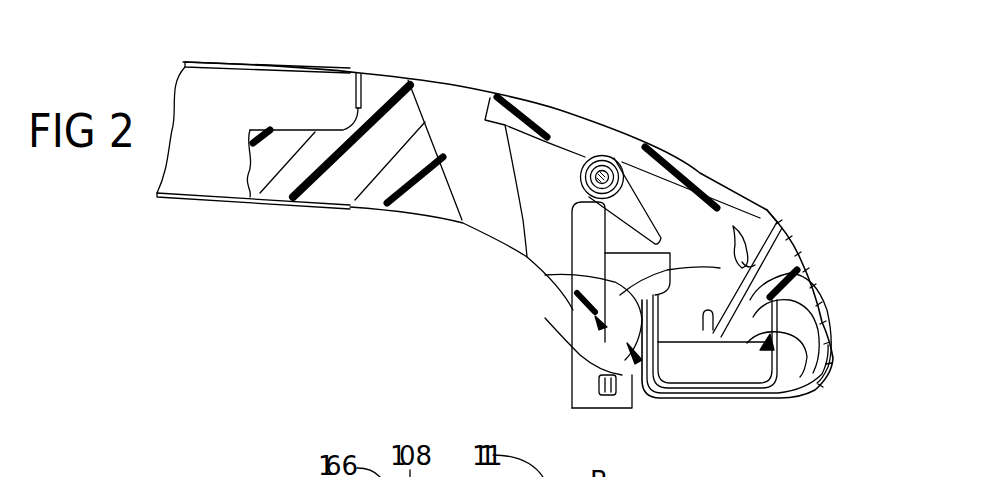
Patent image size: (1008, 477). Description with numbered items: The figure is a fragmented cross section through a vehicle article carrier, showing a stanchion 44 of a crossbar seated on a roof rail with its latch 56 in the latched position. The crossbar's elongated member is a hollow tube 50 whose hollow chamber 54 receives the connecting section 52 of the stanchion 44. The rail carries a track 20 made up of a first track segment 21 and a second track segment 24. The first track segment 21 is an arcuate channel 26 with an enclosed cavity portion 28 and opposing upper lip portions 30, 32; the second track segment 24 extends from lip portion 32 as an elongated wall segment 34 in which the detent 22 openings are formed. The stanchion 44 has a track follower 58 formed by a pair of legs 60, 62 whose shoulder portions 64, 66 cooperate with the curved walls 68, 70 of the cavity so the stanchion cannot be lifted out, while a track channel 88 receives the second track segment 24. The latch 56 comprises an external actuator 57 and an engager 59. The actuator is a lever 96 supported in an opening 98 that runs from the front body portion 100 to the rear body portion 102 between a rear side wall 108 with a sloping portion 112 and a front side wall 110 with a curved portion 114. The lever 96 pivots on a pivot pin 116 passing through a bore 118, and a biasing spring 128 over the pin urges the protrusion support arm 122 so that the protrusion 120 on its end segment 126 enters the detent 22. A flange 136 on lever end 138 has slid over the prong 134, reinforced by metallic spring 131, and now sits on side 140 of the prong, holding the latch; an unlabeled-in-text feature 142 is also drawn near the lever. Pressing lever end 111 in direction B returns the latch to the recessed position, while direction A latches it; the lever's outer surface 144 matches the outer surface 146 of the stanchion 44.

The hollow tube 50 is at (205, 60).
The hollow chamber 54 is at (277, 87).
The connecting section 52 is at (287, 183).
The outer surface of the support member 146 is at (378, 85).
The rear body portion 102 is at (390, 93).
The rear side wall 108 is at (440, 135).
The sloping portion 112 is at (447, 120).
The arrow B is at (497, 97).
The lever end 111 is at (520, 102).
The bore 118 is at (602, 175).
The pivot pin 116 is at (600, 173).
The latch 56 is at (621, 141).
The outer surface of the lever 144 is at (638, 185).
The biasing spring 128 is at (647, 220).
The external actuator 57 is at (773, 218).
The lever 96 is at (742, 195).
The door frame flange 142 is at (762, 204).
The arrow A is at (760, 198).
The opening 98 is at (767, 199).
The end of lever 138 is at (780, 219).
The front side wall 110 is at (785, 244).
The stanchion 44 is at (795, 262).
The front body portion 100 is at (777, 265).
The upper lip portion 30 is at (804, 280).
The shoulder portion 64 is at (796, 320).
The track 20 is at (807, 324).
The curved wall 68 is at (804, 350).
The first track segment 21 is at (798, 380).
The track follower 58 is at (780, 387).
The metallic spring 131 is at (775, 402).
The enclosed cavity portion 28 is at (757, 383).
The arcuate channel 26 is at (737, 400).
The prong 134 is at (708, 380).
The protrusion 120 is at (627, 360).
The protrusion support arm 122 is at (580, 243).
The track channel 88 is at (613, 406).
The second track segment 24 is at (597, 379).
The detent 22 is at (585, 369).
The end segment 126 is at (600, 340).
The engager 59 is at (635, 352).
The shoulder portion 66 is at (642, 342).
The curved wall 70 is at (647, 318).
The elongated wall segment 34 is at (560, 275).
The upper lip portion 32 is at (655, 295).
The flange 136 is at (740, 230).
The side of prong 140 is at (740, 277).
The curved portion 114 is at (728, 316).
The leg 62 is at (681, 333).
The leg 60 is at (728, 332).